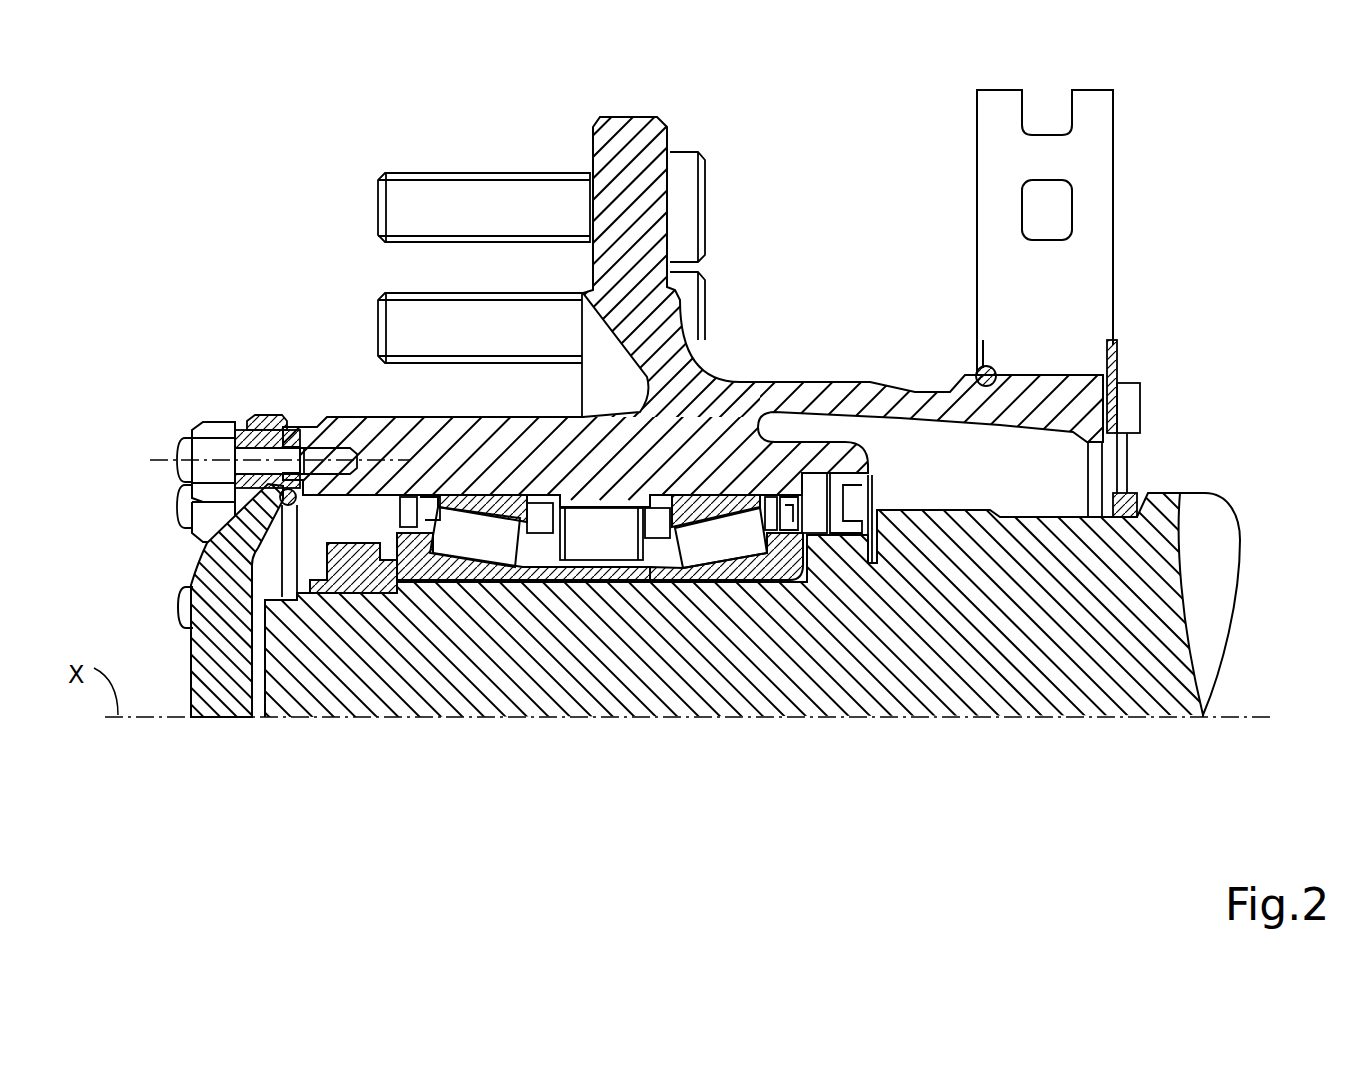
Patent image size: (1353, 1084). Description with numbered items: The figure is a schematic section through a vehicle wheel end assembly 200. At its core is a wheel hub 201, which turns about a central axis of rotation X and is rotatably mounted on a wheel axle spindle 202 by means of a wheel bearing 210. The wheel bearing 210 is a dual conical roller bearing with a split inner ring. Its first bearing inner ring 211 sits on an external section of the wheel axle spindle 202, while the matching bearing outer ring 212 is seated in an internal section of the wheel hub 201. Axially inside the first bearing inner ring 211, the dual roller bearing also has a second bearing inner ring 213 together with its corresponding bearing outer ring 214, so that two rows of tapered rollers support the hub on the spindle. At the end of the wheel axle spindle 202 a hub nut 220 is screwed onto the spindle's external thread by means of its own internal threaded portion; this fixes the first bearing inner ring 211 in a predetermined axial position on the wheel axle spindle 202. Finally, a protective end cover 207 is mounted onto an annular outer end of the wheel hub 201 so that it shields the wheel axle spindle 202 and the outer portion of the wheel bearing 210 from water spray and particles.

The wheel end assembly 200 is at (270, 165).
The wheel hub 201 is at (817, 382).
The wheel axle spindle 202 is at (823, 673).
The protective end cover 207 is at (220, 707).
The wheel bearing 210 is at (532, 647).
The first bearing inner ring 211 is at (432, 583).
The bearing outer ring 212 is at (485, 495).
The second bearing inner ring 213 is at (748, 583).
The bearing outer ring 214 is at (706, 495).
The hub nut 220 is at (337, 593).